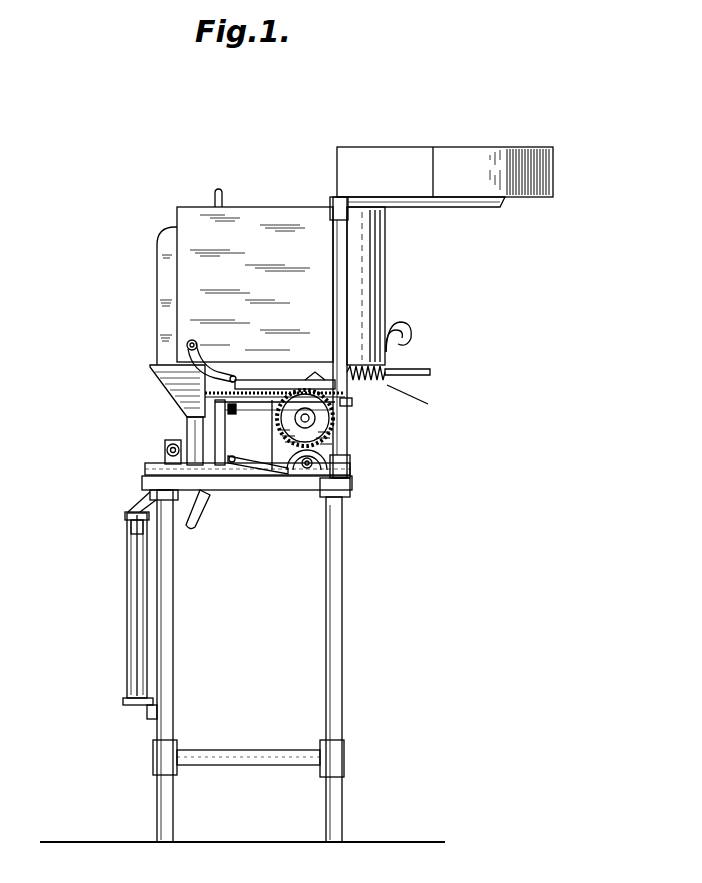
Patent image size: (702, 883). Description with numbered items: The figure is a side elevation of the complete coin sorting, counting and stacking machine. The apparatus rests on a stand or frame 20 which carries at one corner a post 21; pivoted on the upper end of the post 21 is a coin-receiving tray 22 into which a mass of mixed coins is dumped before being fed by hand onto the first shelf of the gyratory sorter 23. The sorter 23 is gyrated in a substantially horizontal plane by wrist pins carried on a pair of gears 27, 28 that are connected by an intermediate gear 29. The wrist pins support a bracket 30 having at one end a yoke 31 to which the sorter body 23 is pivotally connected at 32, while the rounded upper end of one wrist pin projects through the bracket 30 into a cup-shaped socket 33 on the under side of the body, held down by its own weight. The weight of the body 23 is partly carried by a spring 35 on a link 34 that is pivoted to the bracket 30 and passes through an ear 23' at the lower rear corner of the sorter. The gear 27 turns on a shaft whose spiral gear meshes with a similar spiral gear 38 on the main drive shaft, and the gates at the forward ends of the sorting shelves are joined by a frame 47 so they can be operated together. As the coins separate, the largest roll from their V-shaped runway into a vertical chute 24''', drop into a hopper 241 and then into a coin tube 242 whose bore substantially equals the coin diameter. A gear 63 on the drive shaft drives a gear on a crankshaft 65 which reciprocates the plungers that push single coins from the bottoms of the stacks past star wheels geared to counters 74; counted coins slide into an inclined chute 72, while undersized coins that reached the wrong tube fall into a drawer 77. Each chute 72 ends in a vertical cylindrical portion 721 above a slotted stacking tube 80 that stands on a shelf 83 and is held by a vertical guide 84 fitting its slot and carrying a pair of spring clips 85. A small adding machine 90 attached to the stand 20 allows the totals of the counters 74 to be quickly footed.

The stand or frame 20 is at (352, 485).
The post 21 is at (345, 262).
The coin-receiving tray 22 is at (473, 148).
The gyratory sorter 23 is at (255, 254).
The ear 23' is at (424, 406).
The vertical chute 24''' is at (132, 296).
The gear 27 is at (352, 400).
The gear 28 is at (246, 410).
The intermediate gear 29 is at (268, 402).
The bracket 30 is at (262, 380).
The yoke 31 is at (232, 364).
The pivot 32 is at (195, 341).
The cup-shaped socket 33 is at (312, 373).
The link 34 is at (431, 371).
The spring 35 is at (367, 384).
The spiral gear 38 is at (296, 455).
The frame 47 is at (218, 189).
The gear 63 is at (332, 431).
The crankshaft 65 is at (305, 468).
The inclined chute 72 is at (149, 496).
The vertical cylindrical portion 721 is at (124, 516).
The counter 74 is at (164, 443).
The drawer 77 is at (262, 478).
The stacking tube 80 is at (126, 641).
The shelf 83 is at (140, 705).
The vertical guide 84 is at (141, 633).
The spring clips 85 is at (131, 537).
The adding machine 90 is at (198, 524).
The hopper 241 is at (160, 396).
The coin tube 242 is at (186, 425).